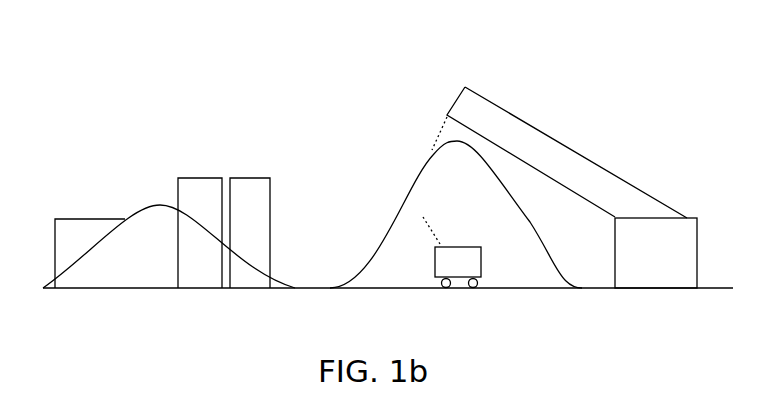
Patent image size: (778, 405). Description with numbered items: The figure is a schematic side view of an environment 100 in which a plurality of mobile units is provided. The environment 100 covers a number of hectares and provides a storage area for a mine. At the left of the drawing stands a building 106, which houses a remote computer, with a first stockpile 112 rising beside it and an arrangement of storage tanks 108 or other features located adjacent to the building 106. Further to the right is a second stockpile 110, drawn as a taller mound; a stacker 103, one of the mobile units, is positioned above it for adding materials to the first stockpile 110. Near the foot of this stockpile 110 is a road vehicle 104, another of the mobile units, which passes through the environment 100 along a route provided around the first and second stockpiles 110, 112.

The environment 100 is at (665, 80).
The stacker 103 is at (515, 110).
The road vehicle 104 is at (483, 265).
The building 106 is at (72, 219).
The storage tanks 108 is at (242, 178).
The first stockpile 110 is at (425, 170).
The second stockpile 112 is at (148, 203).